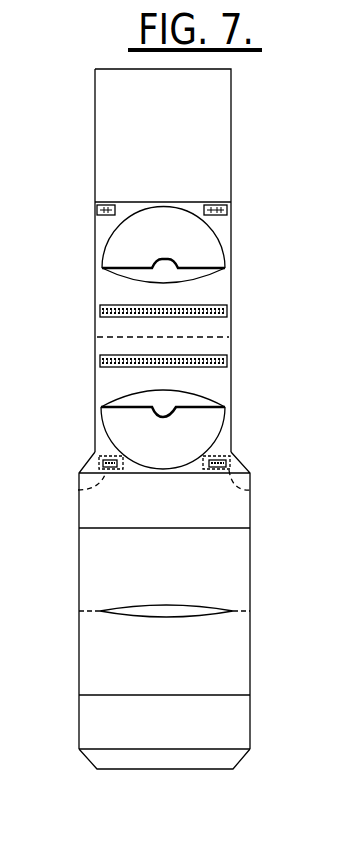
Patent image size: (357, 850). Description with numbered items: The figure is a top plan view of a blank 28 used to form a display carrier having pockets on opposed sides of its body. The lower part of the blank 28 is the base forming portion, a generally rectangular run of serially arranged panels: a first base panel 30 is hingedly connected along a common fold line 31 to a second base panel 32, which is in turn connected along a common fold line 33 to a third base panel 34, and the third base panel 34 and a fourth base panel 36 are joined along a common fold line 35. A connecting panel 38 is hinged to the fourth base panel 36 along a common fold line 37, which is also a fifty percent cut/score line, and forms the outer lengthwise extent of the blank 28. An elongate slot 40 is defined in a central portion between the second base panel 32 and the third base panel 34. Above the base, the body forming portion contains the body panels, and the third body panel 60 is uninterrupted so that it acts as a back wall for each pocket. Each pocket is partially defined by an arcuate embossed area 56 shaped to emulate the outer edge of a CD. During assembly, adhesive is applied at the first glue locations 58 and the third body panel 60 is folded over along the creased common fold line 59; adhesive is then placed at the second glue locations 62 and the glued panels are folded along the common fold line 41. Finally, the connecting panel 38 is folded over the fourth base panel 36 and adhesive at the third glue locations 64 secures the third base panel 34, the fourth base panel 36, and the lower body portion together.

The blank 28 is at (244, 88).
The first base panel 30 is at (105, 507).
The fold line 31 is at (230, 520).
The second base panel 32 is at (100, 570).
The fold line 33 is at (243, 605).
The third base panel 34 is at (100, 655).
The fold line 35 is at (225, 695).
The fourth base panel 36 is at (105, 720).
The fold line 37 is at (230, 749).
The connecting panel 38 is at (108, 758).
The elongate slot 40 is at (205, 568).
The fold line 41 is at (110, 337).
The embossed area 56 is at (198, 243).
The first glue locations 58 is at (108, 203).
The fold line 59 is at (120, 202).
The third body panel 60 is at (107, 90).
The second glue locations 62 is at (228, 360).
The third glue locations 64 is at (78, 490).